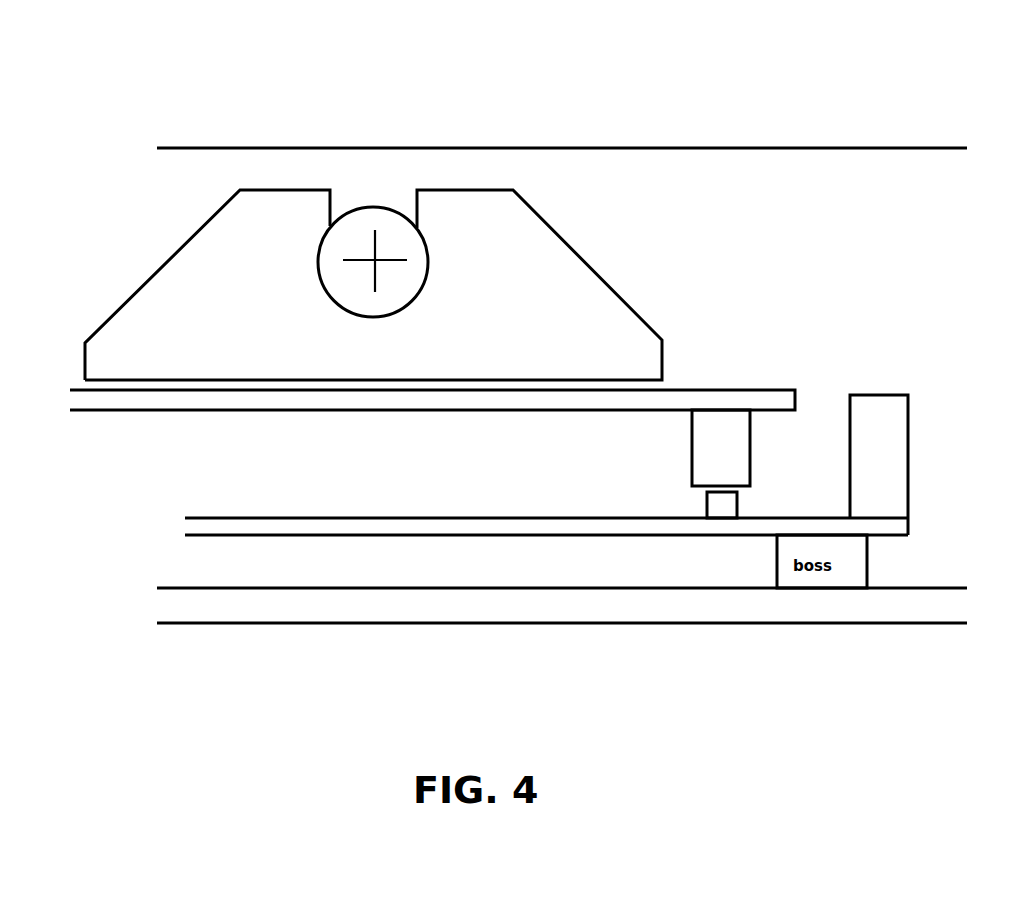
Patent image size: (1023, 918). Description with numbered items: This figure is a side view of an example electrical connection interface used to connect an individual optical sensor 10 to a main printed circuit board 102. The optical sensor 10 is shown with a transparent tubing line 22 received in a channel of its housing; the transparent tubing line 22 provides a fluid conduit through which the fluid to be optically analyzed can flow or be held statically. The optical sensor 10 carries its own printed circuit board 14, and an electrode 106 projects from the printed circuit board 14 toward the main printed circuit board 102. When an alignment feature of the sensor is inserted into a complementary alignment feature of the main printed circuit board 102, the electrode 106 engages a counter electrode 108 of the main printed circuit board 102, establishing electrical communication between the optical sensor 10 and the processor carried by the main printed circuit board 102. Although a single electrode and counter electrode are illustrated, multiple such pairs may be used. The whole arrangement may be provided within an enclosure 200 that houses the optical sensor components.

The enclosure 200 is at (850, 143).
The optical sensor 10 is at (628, 267).
The transparent tubing line 22 is at (382, 210).
The printed circuit board 14 is at (777, 398).
The electrode 106 is at (737, 455).
The counter electrode 108 is at (708, 495).
The main printed circuit board 102 is at (232, 530).